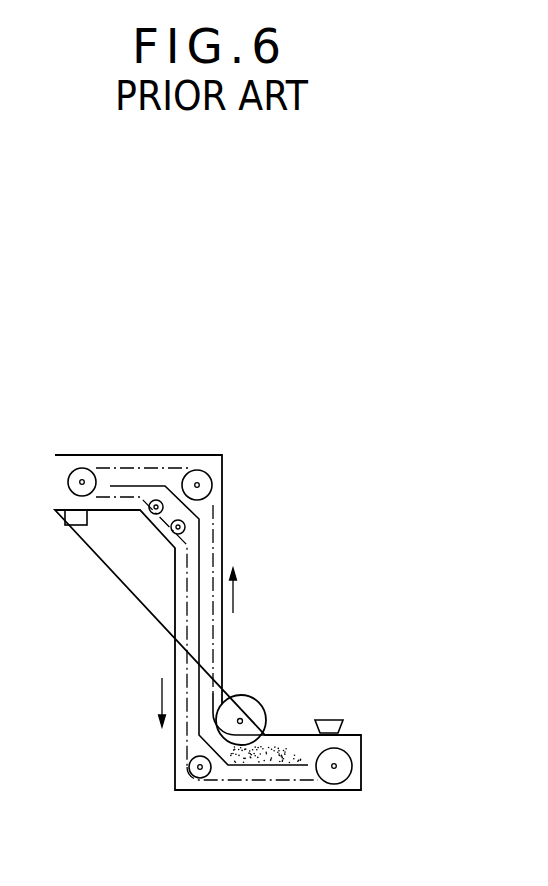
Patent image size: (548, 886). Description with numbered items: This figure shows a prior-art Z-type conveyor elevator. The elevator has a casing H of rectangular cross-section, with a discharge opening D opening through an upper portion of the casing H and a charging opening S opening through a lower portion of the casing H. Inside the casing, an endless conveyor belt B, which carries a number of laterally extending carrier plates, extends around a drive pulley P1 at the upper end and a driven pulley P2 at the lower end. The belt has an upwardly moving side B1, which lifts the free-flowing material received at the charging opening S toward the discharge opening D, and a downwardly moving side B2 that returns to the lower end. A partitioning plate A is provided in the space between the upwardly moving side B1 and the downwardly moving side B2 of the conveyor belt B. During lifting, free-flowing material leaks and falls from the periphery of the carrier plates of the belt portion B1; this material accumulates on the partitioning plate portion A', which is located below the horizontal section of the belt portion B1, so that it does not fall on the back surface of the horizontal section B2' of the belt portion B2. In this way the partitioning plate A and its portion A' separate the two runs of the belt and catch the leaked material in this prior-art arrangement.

The drive pulley P1 is at (80, 468).
The driven pulley P2 is at (335, 777).
The casing H is at (222, 493).
The discharge opening D is at (75, 526).
The partitioning plate A is at (231, 625).
The partitioning plate portion A' is at (266, 798).
The endless conveyor belt B is at (215, 628).
The upwardly moving side of the conveyor belt B1 is at (215, 657).
The downwardly moving side of the conveyor belt B2 is at (142, 632).
The horizontal section of the belt portion B2 B2' is at (250, 808).
The charging opening S is at (333, 717).